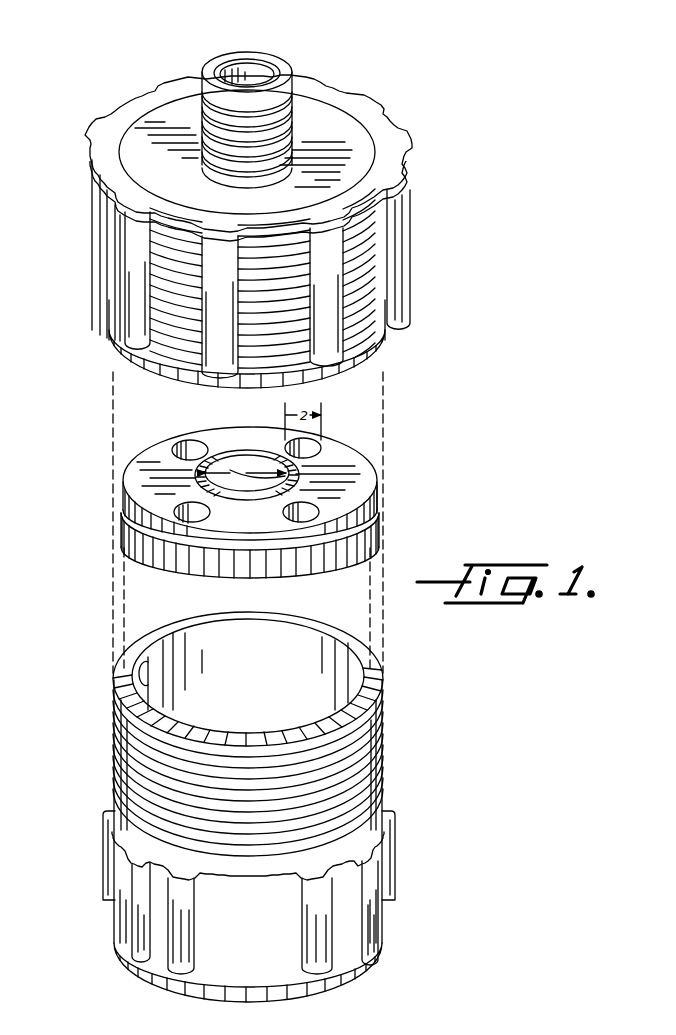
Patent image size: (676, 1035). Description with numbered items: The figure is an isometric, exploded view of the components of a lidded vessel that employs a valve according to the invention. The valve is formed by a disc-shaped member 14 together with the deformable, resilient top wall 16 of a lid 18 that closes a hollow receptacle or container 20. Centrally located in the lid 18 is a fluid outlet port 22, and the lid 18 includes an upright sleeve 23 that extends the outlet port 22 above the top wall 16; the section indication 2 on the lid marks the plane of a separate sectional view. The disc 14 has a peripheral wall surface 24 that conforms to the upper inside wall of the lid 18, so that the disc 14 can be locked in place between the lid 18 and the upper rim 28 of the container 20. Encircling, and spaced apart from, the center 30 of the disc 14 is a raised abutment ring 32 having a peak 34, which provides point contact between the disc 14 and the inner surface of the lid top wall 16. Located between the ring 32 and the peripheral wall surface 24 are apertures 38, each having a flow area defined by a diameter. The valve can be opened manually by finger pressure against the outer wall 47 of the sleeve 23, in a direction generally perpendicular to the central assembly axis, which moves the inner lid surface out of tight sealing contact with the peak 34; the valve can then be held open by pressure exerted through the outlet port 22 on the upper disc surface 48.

The section line 2- 2 is at (80, 103).
The disc-shaped member 14 is at (116, 466).
The top wall 16 is at (150, 120).
The lid 18 is at (110, 102).
The container 20 is at (108, 752).
The fluid outlet port 22 is at (238, 52).
The upright sleeve 23 is at (193, 100).
The peripheral wall surface 24 is at (368, 494).
The upper rim 28 is at (148, 670).
The center 30 is at (270, 482).
The raised abutment ring 32 is at (218, 455).
The peak 34 is at (234, 452).
The apertures 38 is at (180, 510).
The outer wall 47 is at (288, 100).
The upper disc surface 48 is at (268, 488).